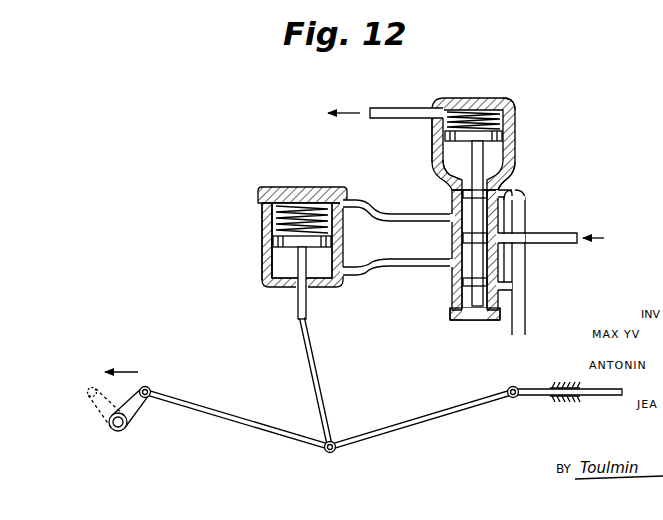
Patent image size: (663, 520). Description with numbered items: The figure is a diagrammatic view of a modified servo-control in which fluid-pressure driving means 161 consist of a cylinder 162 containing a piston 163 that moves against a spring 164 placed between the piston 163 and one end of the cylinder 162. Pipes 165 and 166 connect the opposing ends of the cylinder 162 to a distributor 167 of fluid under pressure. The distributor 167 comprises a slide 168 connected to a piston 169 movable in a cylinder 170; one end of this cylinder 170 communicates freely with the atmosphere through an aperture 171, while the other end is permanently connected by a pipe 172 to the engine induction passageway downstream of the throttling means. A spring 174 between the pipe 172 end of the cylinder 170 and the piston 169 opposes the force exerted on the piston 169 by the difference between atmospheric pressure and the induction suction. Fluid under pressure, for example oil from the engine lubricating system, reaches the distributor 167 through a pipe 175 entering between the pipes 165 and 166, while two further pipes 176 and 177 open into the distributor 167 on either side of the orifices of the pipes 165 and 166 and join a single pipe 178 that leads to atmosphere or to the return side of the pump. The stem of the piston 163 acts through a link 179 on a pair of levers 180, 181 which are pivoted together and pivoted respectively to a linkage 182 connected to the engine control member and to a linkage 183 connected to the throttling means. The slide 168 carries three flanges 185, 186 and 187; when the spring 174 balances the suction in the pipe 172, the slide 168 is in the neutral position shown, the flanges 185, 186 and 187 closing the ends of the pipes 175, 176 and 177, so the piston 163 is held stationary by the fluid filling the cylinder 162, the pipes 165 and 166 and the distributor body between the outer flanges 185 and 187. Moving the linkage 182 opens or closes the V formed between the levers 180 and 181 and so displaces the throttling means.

The driving means 161 is at (262, 260).
The cylinder 162 is at (262, 226).
The piston 163 is at (318, 250).
The spring 164 is at (311, 186).
The pipe 165 is at (395, 221).
The pipe 166 is at (389, 268).
The distributor 167 is at (518, 151).
The slide 168 is at (513, 170).
The piston 169 is at (513, 114).
The cylinder 170 is at (432, 124).
The aperture 171 is at (440, 160).
The pipe 172 is at (386, 108).
The spring 174 is at (470, 106).
The pipe 175 is at (576, 236).
The pipe 176 is at (505, 197).
The pipe 177 is at (506, 292).
The single pipe 178 is at (525, 313).
The link 179 is at (332, 360).
The lever 180 is at (245, 411).
The lever 181 is at (412, 418).
The linkage 182 is at (590, 397).
The linkage 183 is at (135, 412).
The flange 185 is at (462, 285).
The flange 186 is at (462, 238).
The flange 187 is at (458, 200).